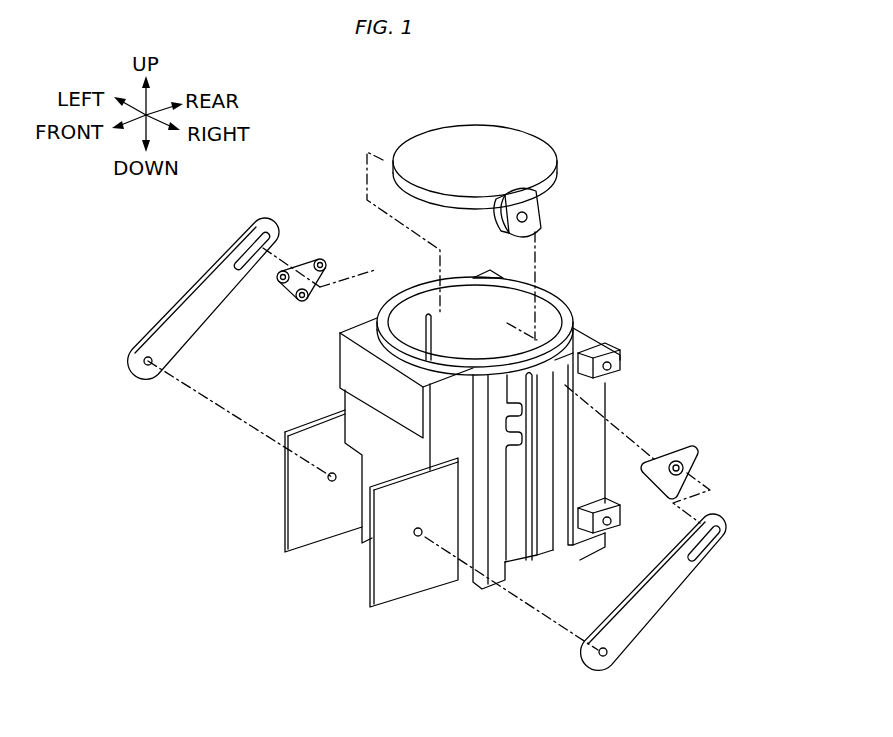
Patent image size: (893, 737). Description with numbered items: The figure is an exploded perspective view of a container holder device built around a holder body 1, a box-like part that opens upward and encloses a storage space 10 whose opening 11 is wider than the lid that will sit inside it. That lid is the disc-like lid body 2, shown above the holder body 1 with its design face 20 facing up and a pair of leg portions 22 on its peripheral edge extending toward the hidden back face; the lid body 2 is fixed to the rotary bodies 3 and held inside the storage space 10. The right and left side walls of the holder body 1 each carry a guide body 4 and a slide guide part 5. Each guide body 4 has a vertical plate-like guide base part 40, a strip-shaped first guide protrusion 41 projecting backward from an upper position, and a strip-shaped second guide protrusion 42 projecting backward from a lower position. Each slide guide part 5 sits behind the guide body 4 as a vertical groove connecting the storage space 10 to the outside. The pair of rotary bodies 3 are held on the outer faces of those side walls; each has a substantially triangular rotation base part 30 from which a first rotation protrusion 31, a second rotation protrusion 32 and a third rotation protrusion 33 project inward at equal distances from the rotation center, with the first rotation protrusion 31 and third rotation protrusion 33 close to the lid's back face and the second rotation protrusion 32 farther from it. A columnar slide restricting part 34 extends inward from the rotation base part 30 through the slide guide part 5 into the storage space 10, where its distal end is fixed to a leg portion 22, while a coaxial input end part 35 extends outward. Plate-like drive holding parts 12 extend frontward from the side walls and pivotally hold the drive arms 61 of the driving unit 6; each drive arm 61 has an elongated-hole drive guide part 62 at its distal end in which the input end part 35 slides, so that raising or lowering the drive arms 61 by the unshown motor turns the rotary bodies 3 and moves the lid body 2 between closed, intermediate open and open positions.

The holder body 1 is at (480, 438).
The lid body 2 is at (510, 126).
The design face 20 is at (428, 142).
The leg portions 22 is at (541, 209).
The rotary bodies 3 is at (495, 369).
The rotation base part 30 is at (293, 292).
The first rotation protrusion 31 is at (283, 283).
The second rotation protrusion 32 is at (303, 300).
The third rotation protrusion 33 is at (325, 262).
The slide restricting part 34 is at (312, 290).
The input end part 35 is at (660, 487).
The guide bodies 4 is at (490, 540).
The guide base part 40 is at (506, 515).
The first guide protrusion 41 is at (512, 412).
The second guide protrusion 42 is at (512, 450).
The slide guide parts 5 is at (433, 334).
The driving unit 6 is at (451, 420).
The drive arms 61 is at (182, 298).
The drive guide part 62 is at (263, 220).
The storage space 10 is at (496, 321).
The opening 11 is at (545, 300).
The drive holding parts 12 is at (285, 478).